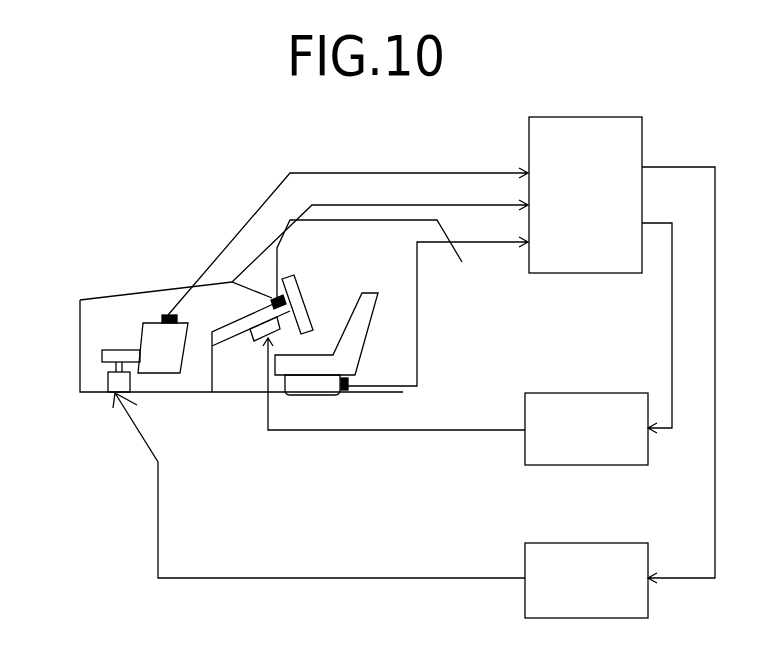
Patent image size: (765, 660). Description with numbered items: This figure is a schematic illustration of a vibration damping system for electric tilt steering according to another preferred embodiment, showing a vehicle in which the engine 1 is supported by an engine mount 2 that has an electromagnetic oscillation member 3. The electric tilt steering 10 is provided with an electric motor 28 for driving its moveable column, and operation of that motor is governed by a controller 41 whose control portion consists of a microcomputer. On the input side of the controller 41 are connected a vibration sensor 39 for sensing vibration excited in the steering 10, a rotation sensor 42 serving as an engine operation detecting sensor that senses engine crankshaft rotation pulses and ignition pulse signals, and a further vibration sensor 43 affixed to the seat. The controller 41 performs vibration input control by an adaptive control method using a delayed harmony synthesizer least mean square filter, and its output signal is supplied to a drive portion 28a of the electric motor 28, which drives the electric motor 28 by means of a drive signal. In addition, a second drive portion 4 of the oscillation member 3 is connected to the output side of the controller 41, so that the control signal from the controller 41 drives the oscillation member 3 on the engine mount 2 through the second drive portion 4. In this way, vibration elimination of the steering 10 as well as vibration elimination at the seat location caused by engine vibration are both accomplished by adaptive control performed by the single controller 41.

The engine 1 is at (140, 340).
The engine mount 2 is at (98, 382).
The oscillation member 3 is at (110, 395).
The second drive portion 4 is at (618, 543).
The electric tilt steering 10 is at (244, 342).
The electric motor 28 is at (302, 322).
The drive portion 28a is at (598, 393).
The vibration sensor 39 is at (275, 297).
The controller 41 is at (599, 110).
The rotation sensor 42 is at (167, 315).
The vibration sensor 43 is at (348, 390).